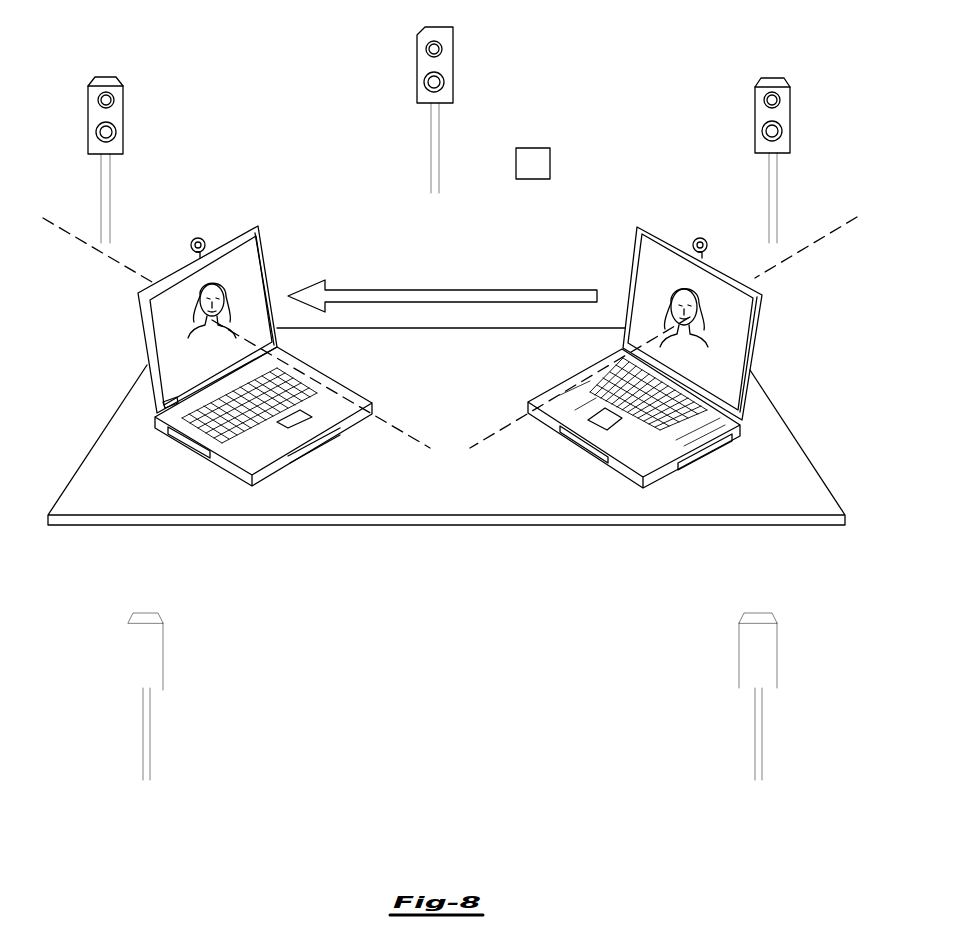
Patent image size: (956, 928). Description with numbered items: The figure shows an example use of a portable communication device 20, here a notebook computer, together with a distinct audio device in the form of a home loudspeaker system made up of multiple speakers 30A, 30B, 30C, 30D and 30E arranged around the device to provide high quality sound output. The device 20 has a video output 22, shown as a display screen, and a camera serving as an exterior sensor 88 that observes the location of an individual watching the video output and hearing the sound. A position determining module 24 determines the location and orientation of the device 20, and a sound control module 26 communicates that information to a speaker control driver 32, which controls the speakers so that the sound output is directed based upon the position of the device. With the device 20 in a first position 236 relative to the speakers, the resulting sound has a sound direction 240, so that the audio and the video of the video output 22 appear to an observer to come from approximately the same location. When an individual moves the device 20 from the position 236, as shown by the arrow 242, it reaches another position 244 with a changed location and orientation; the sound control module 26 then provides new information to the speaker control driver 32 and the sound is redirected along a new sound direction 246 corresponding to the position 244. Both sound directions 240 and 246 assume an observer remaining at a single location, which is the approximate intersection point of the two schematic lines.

The portable communication device 20 is at (138, 345).
The video output 22 is at (215, 308).
The position determining module 24 is at (688, 430).
The sound control module 26 is at (575, 402).
The speaker 30A is at (755, 113).
The speaker 30B is at (417, 65).
The speaker 30C is at (124, 115).
The speaker 30D is at (163, 655).
The speaker 30E is at (739, 655).
The speaker control driver 32 is at (533, 148).
The camera 88 is at (198, 238).
The first position 236 is at (710, 480).
The sound direction 240 is at (518, 422).
The arrow 242 is at (450, 290).
The position 244 is at (198, 452).
The sound direction 246 is at (378, 421).